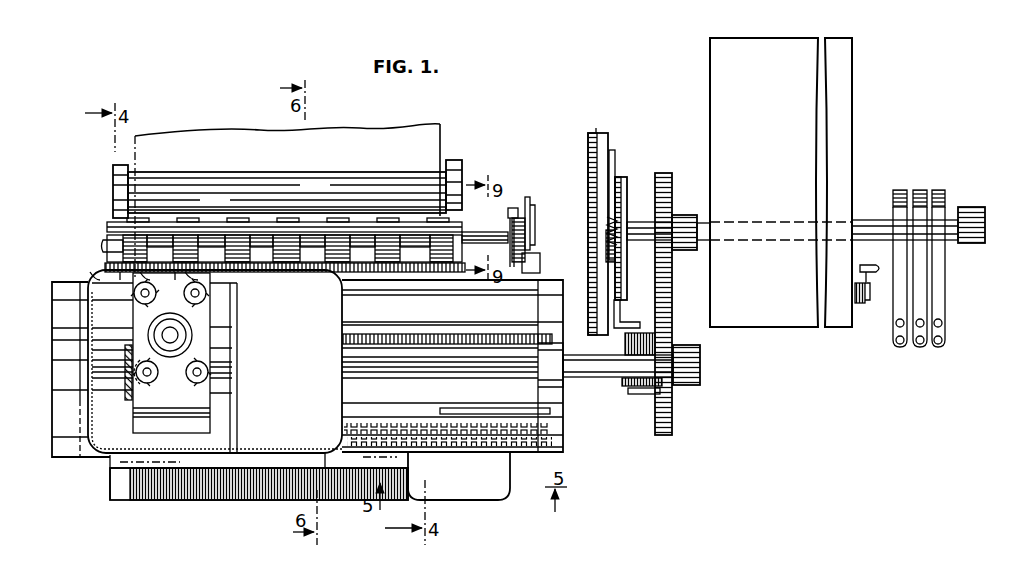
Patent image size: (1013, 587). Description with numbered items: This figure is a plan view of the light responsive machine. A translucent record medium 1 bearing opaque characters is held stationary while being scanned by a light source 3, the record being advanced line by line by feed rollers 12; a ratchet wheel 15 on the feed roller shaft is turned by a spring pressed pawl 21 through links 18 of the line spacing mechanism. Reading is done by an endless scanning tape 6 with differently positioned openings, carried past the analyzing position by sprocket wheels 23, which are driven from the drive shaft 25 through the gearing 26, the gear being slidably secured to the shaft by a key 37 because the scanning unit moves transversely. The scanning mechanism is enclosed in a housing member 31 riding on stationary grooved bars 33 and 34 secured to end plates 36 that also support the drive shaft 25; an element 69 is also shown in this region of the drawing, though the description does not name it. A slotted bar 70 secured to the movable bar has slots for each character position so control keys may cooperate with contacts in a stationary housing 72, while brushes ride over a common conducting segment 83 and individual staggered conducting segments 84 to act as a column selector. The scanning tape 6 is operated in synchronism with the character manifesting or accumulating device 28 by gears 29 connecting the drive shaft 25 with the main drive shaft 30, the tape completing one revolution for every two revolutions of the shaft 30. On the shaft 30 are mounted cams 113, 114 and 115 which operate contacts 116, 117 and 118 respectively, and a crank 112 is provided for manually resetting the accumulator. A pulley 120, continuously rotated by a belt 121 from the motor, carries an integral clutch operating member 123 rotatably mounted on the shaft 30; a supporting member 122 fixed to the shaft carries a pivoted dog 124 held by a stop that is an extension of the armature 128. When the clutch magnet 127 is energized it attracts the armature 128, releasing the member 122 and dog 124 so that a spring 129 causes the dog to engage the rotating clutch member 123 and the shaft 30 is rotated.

The translucent record medium 1 is at (345, 137).
The light source 3 is at (393, 178).
The scanning tape 6 is at (210, 326).
The feed rollers 12 is at (435, 243).
The ratchet wheel 15 is at (525, 235).
The links 18 is at (531, 207).
The spring pressed pawl 21 is at (514, 208).
The sprocket wheels 23 is at (187, 292).
The drive shaft 25 is at (600, 365).
The gearing 26 is at (126, 396).
The character manifesting or indicating device 28 is at (762, 312).
The gears 29 is at (673, 320).
The drive shaft 30 is at (700, 248).
The housing member 31 is at (328, 311).
The stationary grooved bar 33 is at (409, 331).
The stationary grooved bar 34 is at (517, 291).
The end plates 36 is at (553, 292).
The key 37 is at (405, 368).
The rack 69 is at (446, 336).
The elongated slotted bar 70 is at (238, 484).
The stationary housing 72 is at (468, 482).
The common conducting segment 83 is at (506, 414).
The individual staggered conducting segments 84 is at (532, 432).
The crank 112 is at (866, 300).
The cam 113 is at (940, 194).
The cam 114 is at (920, 192).
The cam 115 is at (893, 205).
The contacts 116 is at (940, 285).
The contacts 117 is at (918, 268).
The contacts 118 is at (900, 277).
The pulley 120 is at (608, 146).
The belt 121 is at (596, 133).
The supporting member 122 is at (628, 180).
The clutch operating member 123 is at (614, 172).
The dog 124 is at (627, 257).
The clutch magnet 127 is at (626, 345).
The armature 128 is at (620, 330).
The spring 129 is at (620, 220).